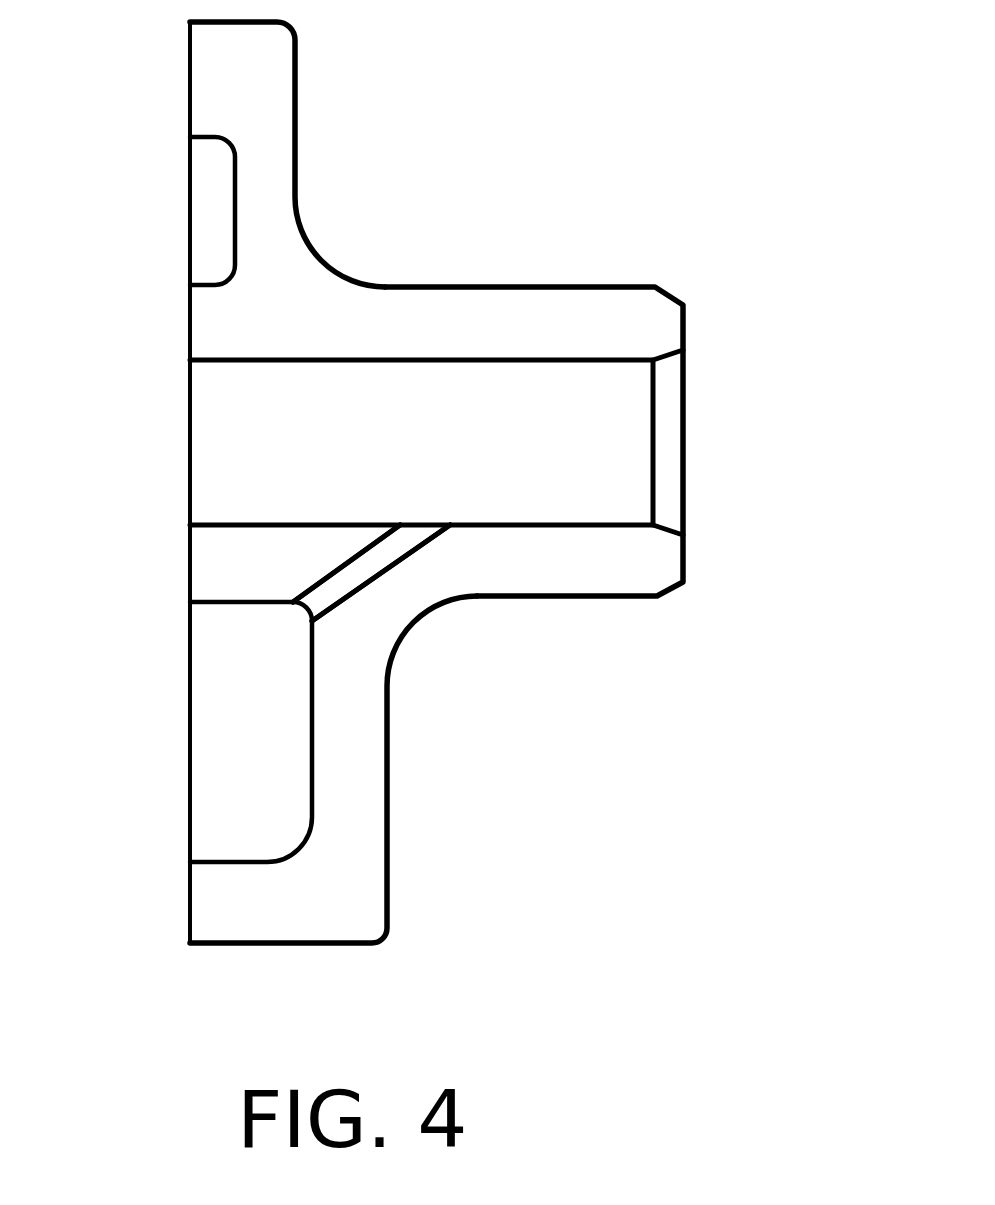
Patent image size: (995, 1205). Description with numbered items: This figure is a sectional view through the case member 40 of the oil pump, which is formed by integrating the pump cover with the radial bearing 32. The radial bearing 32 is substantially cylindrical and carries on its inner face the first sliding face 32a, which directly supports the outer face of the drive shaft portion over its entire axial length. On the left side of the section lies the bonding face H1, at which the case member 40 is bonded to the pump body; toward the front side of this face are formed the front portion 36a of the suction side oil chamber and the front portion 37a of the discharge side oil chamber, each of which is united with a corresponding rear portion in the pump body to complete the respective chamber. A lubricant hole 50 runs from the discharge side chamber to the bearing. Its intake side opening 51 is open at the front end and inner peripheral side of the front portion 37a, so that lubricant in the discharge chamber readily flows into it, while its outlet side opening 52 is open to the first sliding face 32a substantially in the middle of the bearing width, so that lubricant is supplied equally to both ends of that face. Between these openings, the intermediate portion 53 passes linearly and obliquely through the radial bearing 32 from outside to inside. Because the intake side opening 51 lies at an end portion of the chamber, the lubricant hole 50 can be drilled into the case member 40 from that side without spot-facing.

The bonding face H1 is at (190, 95).
The case member 40 is at (428, 281).
The radial bearing 32 is at (608, 287).
The first sliding face 32a is at (590, 525).
The front portion of the suction side oil chamber 36a is at (210, 207).
The front portion of the discharge side oil chamber 37a is at (208, 817).
The outlet side opening 52 is at (425, 525).
The intermediate portion 53 is at (342, 562).
The lubricant hole 50 is at (389, 575).
The intake side opening 51 is at (297, 605).